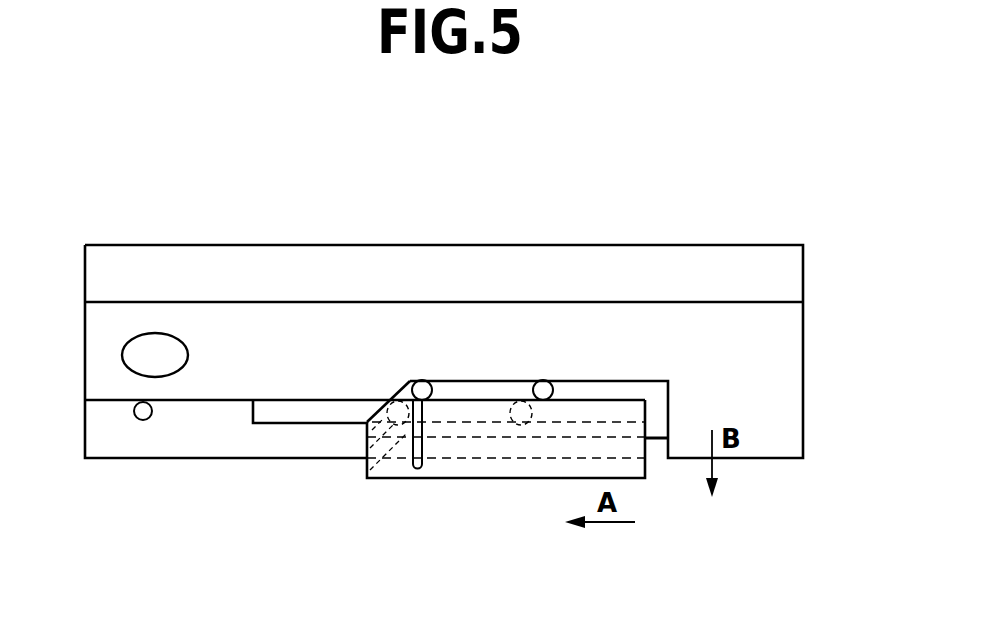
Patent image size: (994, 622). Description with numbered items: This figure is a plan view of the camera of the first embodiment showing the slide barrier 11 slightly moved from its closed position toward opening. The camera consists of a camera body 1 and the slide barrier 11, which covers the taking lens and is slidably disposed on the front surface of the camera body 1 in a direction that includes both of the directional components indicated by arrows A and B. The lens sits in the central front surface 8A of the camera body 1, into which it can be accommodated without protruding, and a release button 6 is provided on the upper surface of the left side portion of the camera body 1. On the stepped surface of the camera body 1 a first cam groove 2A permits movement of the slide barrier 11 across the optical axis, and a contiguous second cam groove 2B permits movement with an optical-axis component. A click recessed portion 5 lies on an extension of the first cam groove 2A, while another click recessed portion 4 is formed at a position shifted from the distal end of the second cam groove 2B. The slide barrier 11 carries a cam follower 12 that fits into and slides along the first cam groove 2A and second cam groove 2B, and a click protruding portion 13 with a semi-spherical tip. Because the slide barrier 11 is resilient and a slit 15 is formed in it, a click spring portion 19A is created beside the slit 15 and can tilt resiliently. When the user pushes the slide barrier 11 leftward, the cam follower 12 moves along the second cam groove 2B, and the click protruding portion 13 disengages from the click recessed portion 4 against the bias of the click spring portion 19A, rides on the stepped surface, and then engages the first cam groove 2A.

The camera body 1 is at (782, 382).
The first cam groove 2A is at (276, 410).
The second cam groove 2B is at (543, 380).
The click recessed portion 4 is at (423, 380).
The click recessed portion 5 is at (145, 420).
The release button 6 is at (163, 342).
The central front surface 8A is at (655, 440).
The slide barrier 11 is at (518, 480).
The cam follower 12 is at (520, 401).
The click protruding portion 13 is at (399, 401).
The slit 15 is at (413, 442).
The click spring portion 19A is at (382, 408).